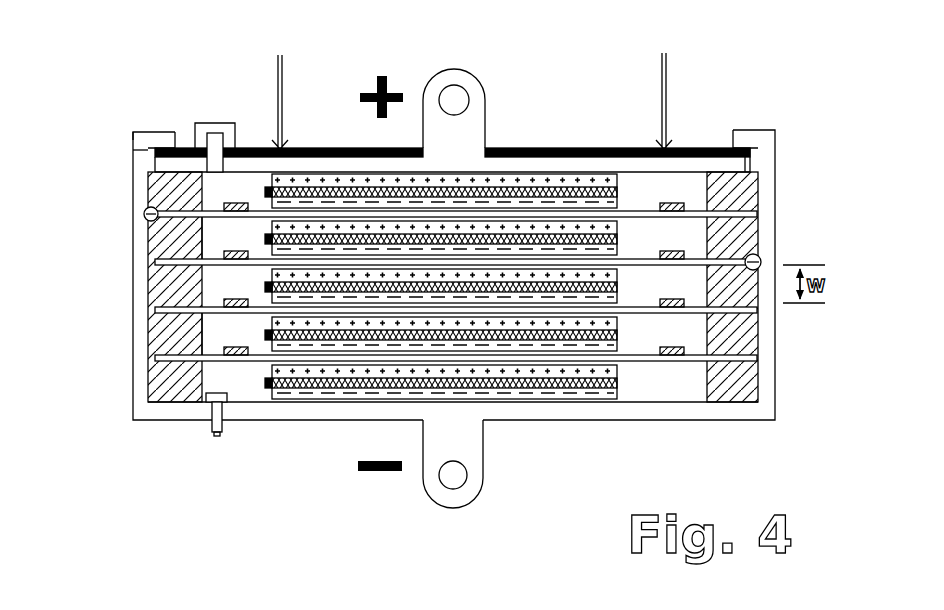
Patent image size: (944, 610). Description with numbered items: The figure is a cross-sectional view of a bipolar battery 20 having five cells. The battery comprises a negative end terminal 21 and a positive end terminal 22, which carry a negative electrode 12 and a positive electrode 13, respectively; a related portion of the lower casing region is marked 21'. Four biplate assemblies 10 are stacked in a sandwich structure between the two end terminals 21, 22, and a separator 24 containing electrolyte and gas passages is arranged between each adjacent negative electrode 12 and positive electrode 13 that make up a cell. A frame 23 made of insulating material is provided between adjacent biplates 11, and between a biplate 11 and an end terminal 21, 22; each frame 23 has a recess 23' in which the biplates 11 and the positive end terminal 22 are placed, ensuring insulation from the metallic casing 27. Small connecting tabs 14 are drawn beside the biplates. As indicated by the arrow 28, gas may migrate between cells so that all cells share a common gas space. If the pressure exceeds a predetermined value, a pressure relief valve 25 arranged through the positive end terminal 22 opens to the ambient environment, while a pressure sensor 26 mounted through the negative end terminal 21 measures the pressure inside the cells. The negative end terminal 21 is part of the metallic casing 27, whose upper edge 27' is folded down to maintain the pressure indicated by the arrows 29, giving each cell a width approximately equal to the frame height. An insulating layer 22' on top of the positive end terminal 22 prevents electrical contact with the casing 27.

The bipolar battery 20 is at (125, 83).
The metallic casing 27 is at (438, 275).
The upper edge 27' is at (453, 82).
The frame 23 is at (463, 290).
The recess 23' is at (461, 238).
The positive electrode 13 is at (585, 174).
The separator 24 is at (525, 190).
The negative electrode 12 is at (548, 395).
The biplate 11 is at (152, 262).
The connecting tab 14 is at (222, 348).
The biplate assembly 10 is at (214, 276).
The arrow 28 is at (214, 325).
The positive end terminal 22 is at (422, 80).
The negative end terminal 21 is at (420, 499).
The negative casing portion 21' is at (87, 142).
The insulating layer 22' is at (808, 142).
The pressure relief valve 25 is at (215, 116).
The pressure sensor 26 is at (207, 438).
The arrows 29 is at (283, 96).